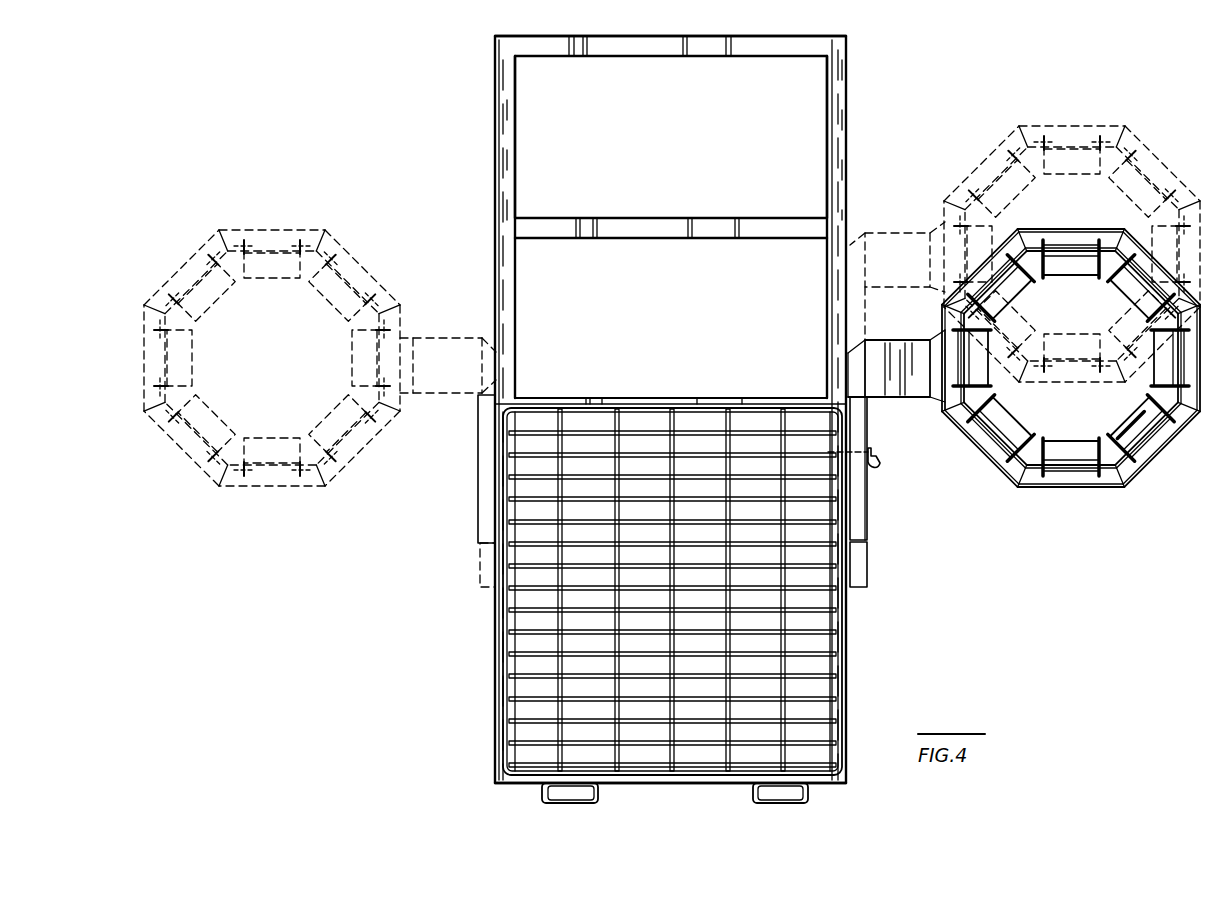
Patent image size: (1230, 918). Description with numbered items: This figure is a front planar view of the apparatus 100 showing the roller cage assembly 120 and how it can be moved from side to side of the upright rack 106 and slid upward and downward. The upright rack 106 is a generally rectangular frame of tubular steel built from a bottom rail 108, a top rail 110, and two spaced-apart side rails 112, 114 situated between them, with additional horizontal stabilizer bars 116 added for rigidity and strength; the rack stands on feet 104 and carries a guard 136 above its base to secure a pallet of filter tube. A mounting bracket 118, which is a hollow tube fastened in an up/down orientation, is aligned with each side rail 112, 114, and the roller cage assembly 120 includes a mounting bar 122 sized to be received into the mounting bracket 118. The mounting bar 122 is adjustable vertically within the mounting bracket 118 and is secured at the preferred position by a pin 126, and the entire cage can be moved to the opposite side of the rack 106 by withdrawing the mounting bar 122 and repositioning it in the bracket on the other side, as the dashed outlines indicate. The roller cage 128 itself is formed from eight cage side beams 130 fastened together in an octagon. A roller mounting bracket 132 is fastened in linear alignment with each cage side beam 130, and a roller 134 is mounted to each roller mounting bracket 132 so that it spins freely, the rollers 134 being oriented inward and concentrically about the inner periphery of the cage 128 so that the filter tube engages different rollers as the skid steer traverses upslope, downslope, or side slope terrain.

The support rack assembly 100 is at (522, 32).
The feet 104 is at (598, 797).
The upright rack 106 is at (852, 42).
The bottom rail 108 is at (538, 767).
The top rail 110 is at (557, 47).
The side rail 112 is at (507, 93).
The side rail 114 is at (840, 70).
The horizontal stabilizer bars 116 is at (792, 400).
The mounting bracket 118 is at (487, 488).
The roller cage assembly 120 is at (358, 246).
The mounting bar 122 is at (862, 560).
The pin 126 is at (880, 467).
The roller cage 128 is at (990, 256).
The cage side beams 130 is at (1070, 473).
The roller mounting brackets 132 is at (1130, 457).
The rollers 134 is at (1142, 425).
The guard 136 is at (815, 625).